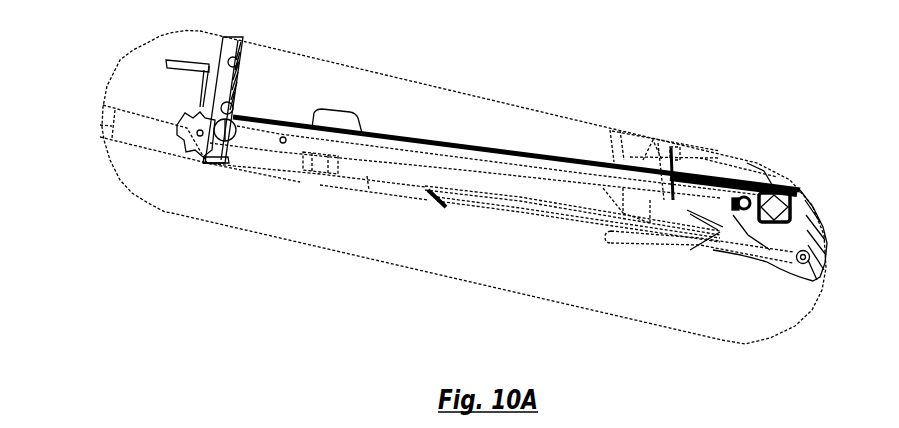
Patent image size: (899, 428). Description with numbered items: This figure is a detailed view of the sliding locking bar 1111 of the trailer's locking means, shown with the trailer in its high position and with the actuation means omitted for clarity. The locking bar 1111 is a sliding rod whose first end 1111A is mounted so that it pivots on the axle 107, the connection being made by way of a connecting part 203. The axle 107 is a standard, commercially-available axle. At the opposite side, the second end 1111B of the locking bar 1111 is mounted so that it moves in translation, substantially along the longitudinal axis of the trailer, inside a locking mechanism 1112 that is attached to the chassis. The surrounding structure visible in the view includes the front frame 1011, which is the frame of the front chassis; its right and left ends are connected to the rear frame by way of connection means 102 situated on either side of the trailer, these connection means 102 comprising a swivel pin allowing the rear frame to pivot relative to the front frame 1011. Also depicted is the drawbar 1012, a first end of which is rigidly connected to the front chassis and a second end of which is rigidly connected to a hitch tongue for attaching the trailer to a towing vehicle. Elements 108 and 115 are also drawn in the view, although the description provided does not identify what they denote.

The connection means 102 is at (657, 160).
The axle 107 is at (757, 175).
The tip portion 108 is at (820, 276).
The rail 115 is at (447, 150).
The connecting part 203 is at (797, 233).
The front frame 1011 is at (225, 168).
The drawbar 1012 is at (100, 117).
The sliding locking bar 1111 is at (507, 208).
The first end of the locking bar 1111A is at (720, 238).
The second end of the locking bar 1111B is at (367, 170).
The locking mechanism 1112 is at (198, 128).